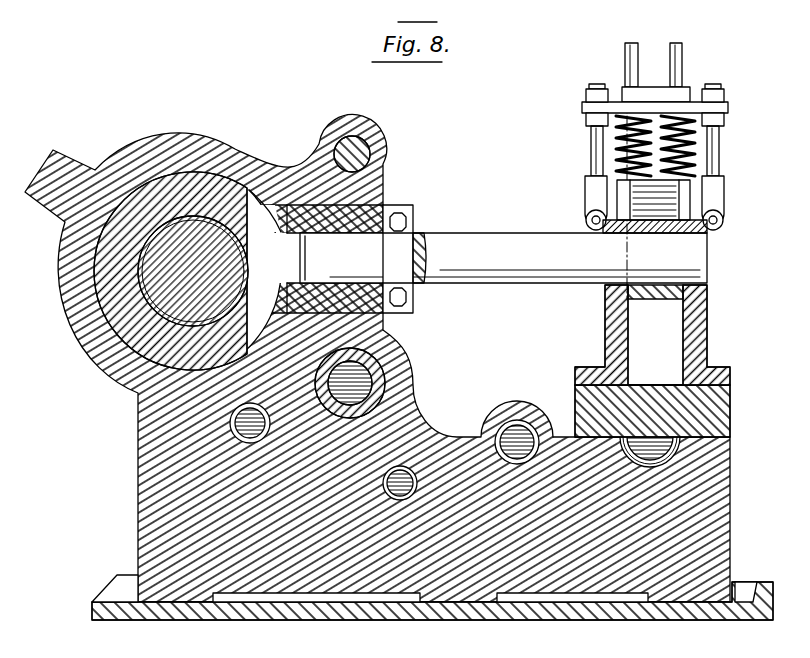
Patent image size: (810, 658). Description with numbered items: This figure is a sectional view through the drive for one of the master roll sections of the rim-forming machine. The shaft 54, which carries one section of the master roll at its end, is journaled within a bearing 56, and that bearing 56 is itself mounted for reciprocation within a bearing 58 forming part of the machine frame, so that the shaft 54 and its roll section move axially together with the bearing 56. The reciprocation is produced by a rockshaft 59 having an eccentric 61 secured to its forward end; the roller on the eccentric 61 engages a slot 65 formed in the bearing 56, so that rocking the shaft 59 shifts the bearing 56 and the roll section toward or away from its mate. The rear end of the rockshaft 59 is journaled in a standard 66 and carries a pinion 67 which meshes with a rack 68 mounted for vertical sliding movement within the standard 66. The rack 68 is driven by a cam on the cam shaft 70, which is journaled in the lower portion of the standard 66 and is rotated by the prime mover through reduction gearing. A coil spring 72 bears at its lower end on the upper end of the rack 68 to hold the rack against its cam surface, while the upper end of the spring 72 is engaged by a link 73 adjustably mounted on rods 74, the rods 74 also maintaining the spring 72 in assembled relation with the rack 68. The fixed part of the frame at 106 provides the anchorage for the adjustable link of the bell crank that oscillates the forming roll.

The shaft 54 is at (155, 318).
The bearing 56 is at (157, 347).
The bearing 58 is at (72, 300).
The rockshaft 59 is at (488, 242).
The eccentric 61 is at (385, 203).
The slot 65 is at (256, 210).
The standard 66 is at (705, 307).
The pinion 67 is at (667, 300).
The rack 68 is at (668, 198).
The cam shaft 70 is at (660, 430).
The coil spring 72 is at (694, 143).
The link 73 is at (680, 107).
The rod 74 is at (672, 58).
The fixed part of the frame 106 is at (373, 147).